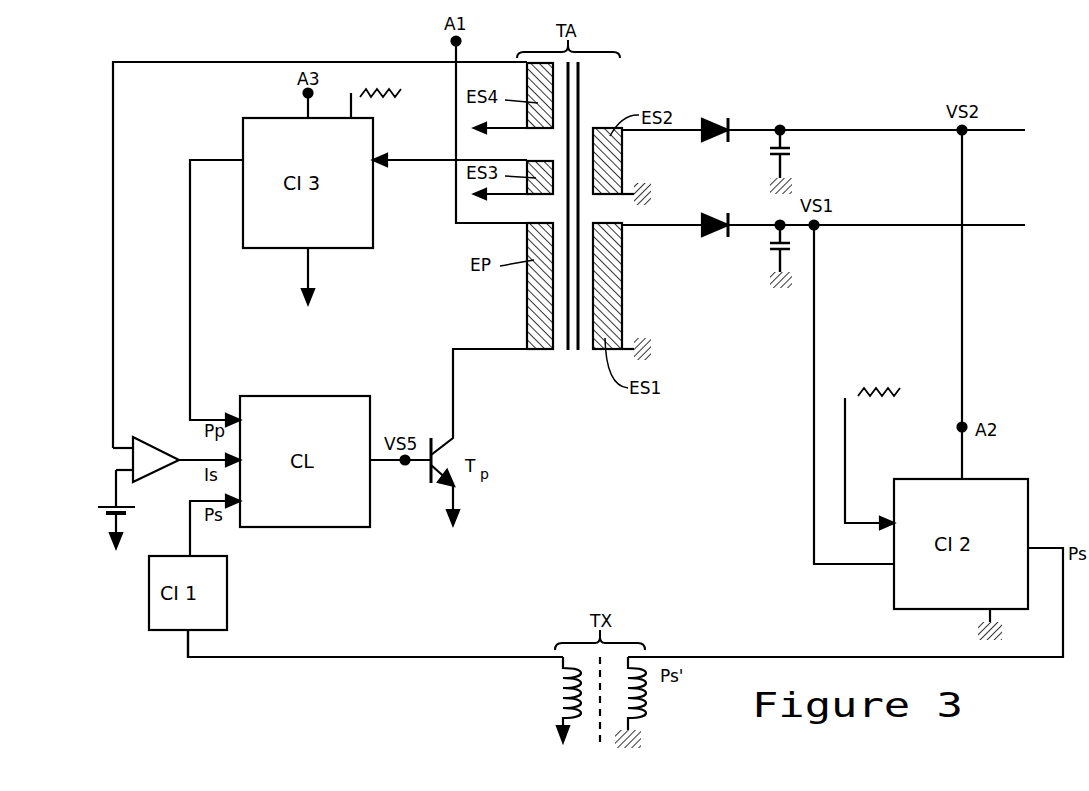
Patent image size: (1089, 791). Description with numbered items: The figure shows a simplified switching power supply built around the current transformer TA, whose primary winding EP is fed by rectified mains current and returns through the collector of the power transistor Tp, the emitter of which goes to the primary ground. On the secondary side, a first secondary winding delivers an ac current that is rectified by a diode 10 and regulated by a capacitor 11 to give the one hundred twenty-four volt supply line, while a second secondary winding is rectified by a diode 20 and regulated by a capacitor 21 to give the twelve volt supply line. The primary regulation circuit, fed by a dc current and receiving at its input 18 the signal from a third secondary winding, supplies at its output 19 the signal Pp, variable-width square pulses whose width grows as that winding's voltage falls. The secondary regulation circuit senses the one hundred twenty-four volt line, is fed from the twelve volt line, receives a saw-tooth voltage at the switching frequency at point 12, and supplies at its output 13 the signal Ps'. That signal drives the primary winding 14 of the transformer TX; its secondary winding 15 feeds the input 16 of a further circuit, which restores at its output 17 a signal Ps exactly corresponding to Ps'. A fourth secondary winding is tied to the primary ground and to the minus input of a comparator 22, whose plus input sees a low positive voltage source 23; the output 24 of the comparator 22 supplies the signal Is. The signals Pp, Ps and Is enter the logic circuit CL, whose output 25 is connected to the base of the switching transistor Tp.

The diode 10 is at (701, 229).
The capacitor 11 is at (772, 251).
The point of introduction of saw-tooth voltage 12 is at (893, 520).
The output of secondary regulation circuit CI2 13 is at (1030, 546).
The primary winding of transformer TX 14 is at (644, 702).
The secondary winding of transformer TX 15 is at (550, 699).
The input of circuit CI1 16 is at (182, 632).
The output of circuit CI1 17 is at (192, 553).
The input line of integrated circuit CI 3 18 is at (379, 163).
The output of primary regulation circuit CI3 19 is at (226, 160).
The diode 20 is at (710, 121).
The capacitor 21 is at (791, 151).
The comparator 22 is at (155, 456).
The positive voltage source 23 is at (135, 508).
The output of comparator 24 is at (176, 466).
The output of logic circuit CL 25 is at (374, 463).